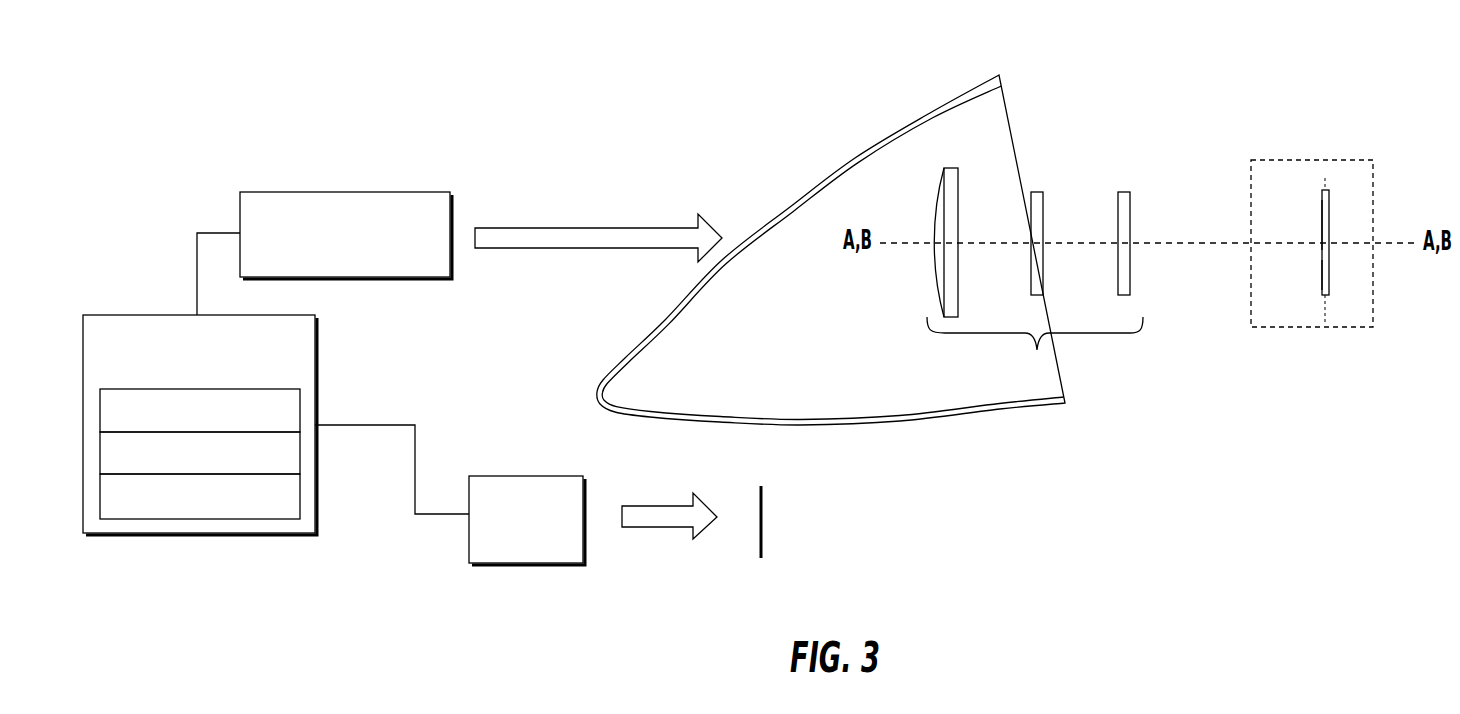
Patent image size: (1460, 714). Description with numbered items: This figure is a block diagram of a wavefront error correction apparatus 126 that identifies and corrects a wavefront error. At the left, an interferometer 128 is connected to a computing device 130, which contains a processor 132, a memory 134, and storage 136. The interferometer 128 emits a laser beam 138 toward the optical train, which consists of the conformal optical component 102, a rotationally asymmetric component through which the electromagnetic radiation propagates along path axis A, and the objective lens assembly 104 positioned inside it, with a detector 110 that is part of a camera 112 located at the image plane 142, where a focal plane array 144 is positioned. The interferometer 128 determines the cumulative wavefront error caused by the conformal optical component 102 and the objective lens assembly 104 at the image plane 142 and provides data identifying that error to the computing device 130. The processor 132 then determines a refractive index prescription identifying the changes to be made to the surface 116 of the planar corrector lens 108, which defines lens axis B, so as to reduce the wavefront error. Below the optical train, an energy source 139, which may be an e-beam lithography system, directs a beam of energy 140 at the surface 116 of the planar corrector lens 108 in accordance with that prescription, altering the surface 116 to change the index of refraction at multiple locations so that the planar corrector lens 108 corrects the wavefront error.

The WFE correction apparatus 126 is at (471, 82).
The interferometer 128 is at (345, 192).
The computing device 130 is at (315, 358).
The processor 132 is at (300, 411).
The memory 134 is at (300, 456).
The storage 136 is at (300, 500).
The laser beam 138 is at (587, 249).
The energy source 139 is at (520, 476).
The beam of energy 140 is at (650, 506).
The conformal optical component 102 is at (855, 158).
The objective lens assembly 104 is at (1037, 350).
The planar corrector lens 108 is at (763, 486).
The detector 110 is at (1325, 297).
The camera 112 is at (1320, 160).
The surface 116 is at (759, 538).
The image plane 142 is at (1322, 305).
The focal plane array 144 is at (1323, 253).